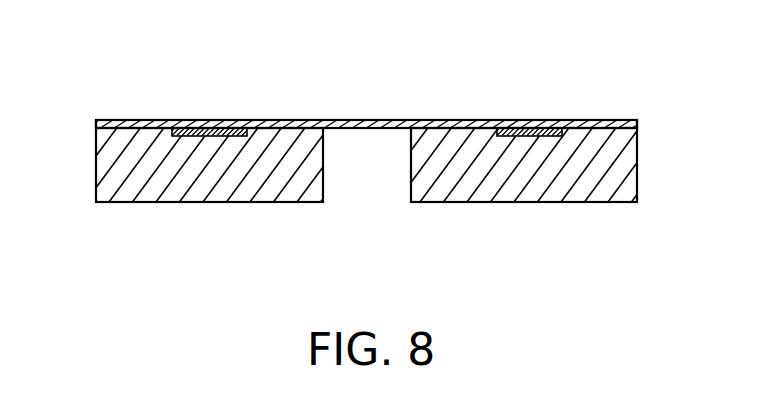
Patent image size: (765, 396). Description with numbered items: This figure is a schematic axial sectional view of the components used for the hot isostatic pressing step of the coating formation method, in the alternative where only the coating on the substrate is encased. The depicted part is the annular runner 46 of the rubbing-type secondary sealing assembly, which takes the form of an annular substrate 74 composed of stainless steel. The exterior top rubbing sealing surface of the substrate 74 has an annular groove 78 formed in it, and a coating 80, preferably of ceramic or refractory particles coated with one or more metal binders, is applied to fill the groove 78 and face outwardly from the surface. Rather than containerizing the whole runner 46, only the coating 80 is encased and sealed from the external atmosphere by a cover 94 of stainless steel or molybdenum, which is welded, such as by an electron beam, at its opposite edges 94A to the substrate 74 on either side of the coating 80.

The runner 46 is at (379, 163).
The substrate 74 is at (627, 167).
The annular groove 78 is at (218, 135).
The coating 80 is at (199, 133).
The cover 94 is at (288, 120).
The opposite edges 94A is at (363, 90).